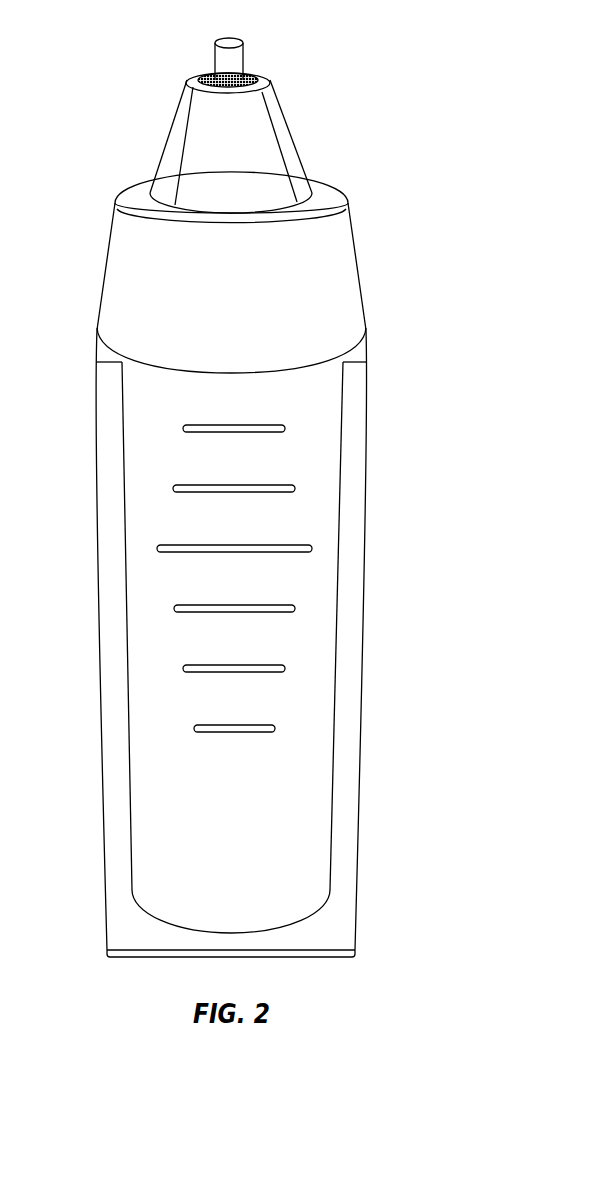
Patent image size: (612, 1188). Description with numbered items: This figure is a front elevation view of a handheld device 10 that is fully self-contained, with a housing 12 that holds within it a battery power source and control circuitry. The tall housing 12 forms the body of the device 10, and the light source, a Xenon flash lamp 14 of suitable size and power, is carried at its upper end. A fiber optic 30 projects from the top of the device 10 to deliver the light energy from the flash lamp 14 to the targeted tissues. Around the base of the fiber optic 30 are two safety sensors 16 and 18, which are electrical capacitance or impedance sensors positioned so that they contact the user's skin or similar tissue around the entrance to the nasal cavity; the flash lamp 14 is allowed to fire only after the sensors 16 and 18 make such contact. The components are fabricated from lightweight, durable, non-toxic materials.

The handheld device 10 is at (342, 125).
The housing 12 is at (367, 480).
The Xenon flash lamp 14 is at (238, 197).
The safety sensor 16 is at (168, 162).
The safety sensor 18 is at (285, 135).
The fiber optic 30 is at (220, 63).